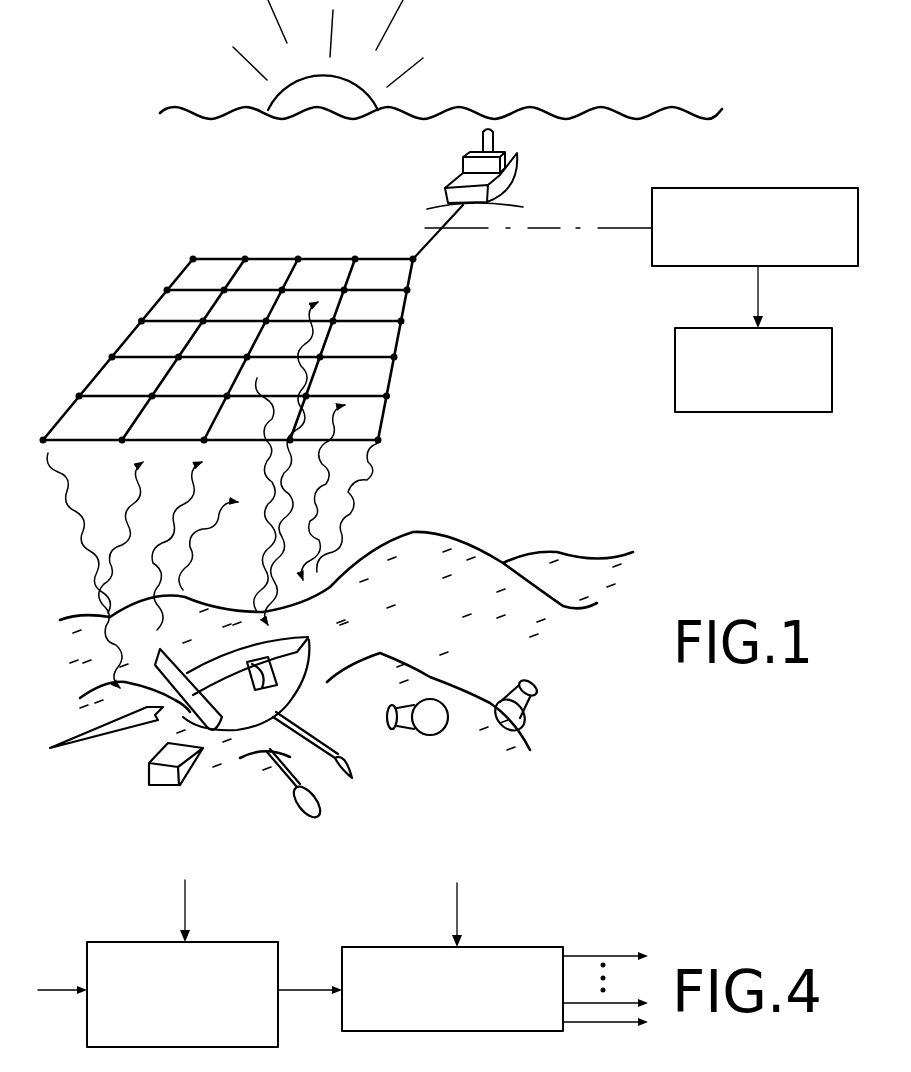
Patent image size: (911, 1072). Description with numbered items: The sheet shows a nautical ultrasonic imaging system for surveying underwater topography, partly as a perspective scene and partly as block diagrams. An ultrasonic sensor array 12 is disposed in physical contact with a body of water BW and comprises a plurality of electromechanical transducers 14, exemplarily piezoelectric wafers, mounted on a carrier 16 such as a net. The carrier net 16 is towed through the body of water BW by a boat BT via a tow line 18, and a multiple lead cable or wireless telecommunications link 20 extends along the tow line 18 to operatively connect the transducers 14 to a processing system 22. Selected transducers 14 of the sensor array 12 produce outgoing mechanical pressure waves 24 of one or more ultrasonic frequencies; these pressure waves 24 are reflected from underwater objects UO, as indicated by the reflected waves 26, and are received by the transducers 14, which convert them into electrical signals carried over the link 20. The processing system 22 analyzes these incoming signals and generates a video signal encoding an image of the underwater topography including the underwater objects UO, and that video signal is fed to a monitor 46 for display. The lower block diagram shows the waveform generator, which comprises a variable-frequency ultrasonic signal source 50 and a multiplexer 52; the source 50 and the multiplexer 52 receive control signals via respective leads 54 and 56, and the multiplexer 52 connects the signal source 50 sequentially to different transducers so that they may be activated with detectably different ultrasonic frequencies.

In FIG. 1, the ultrasonic sensor array 12 is at (205, 212).
In FIG. 1, the electromechanical transducers 14 is at (406, 290).
In FIG. 1, the carrier 16 is at (155, 302).
In FIG. 1, the tow line 18 is at (427, 242).
In FIG. 1, the multiple lead cable or wireless telecommunications link 20 is at (488, 228).
In FIG. 1, the processing system 22 is at (745, 188).
In FIG. 1, the mechanical pressure waves 24 is at (373, 480).
In FIG. 1, the reflected pressure waves 26 is at (347, 492).
In FIG. 1, the monitor 46 is at (675, 360).
In FIG. 1, the body of water BW is at (525, 108).
In FIG. 1, the boat BT is at (510, 152).
In FIG. 1, the underwater objects UO is at (422, 728).
In FIG. 4, the variable-frequency ultrasonic signal source 50 is at (217, 942).
In FIG. 4, the multiplexer 52 is at (497, 947).
In FIG. 4, the lead 54 is at (185, 884).
In FIG. 4, the lead 56 is at (457, 887).